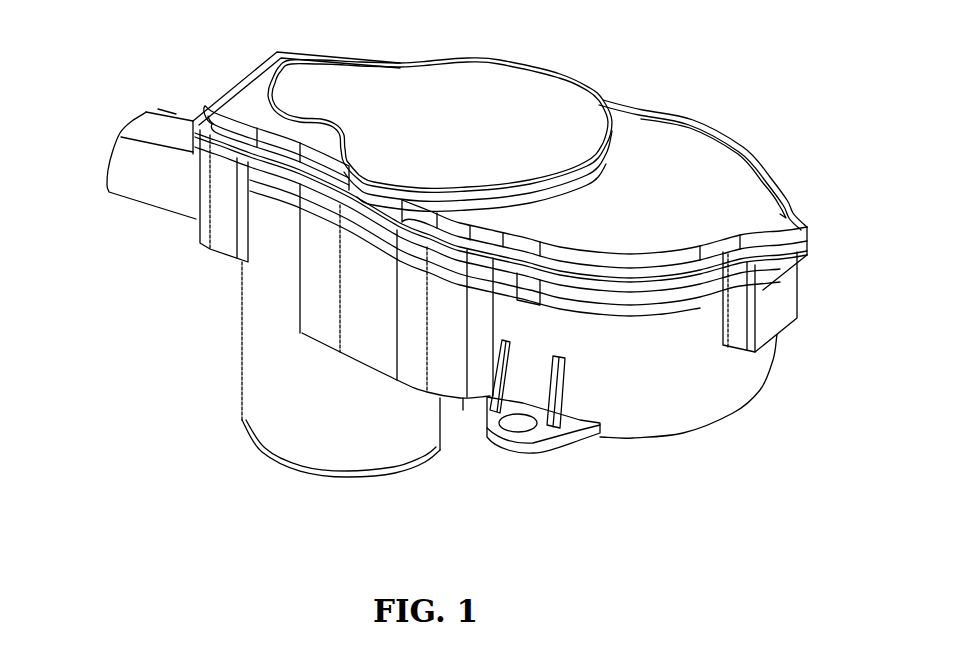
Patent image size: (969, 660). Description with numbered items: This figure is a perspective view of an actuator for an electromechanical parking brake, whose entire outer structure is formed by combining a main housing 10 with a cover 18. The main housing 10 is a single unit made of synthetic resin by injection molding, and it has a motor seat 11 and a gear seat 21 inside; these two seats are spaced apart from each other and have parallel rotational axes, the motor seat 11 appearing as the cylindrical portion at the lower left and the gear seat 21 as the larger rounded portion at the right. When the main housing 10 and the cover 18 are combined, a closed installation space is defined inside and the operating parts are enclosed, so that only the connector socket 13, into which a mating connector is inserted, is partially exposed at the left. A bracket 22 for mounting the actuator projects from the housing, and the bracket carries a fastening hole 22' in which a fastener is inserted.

The main housing 10 is at (233, 347).
The motor seat 11 is at (351, 462).
The connector socket 13 is at (122, 158).
The cover 18 is at (653, 127).
The gear seat 21 is at (737, 400).
The bracket 22 is at (543, 474).
The fastening hole 22' is at (585, 420).